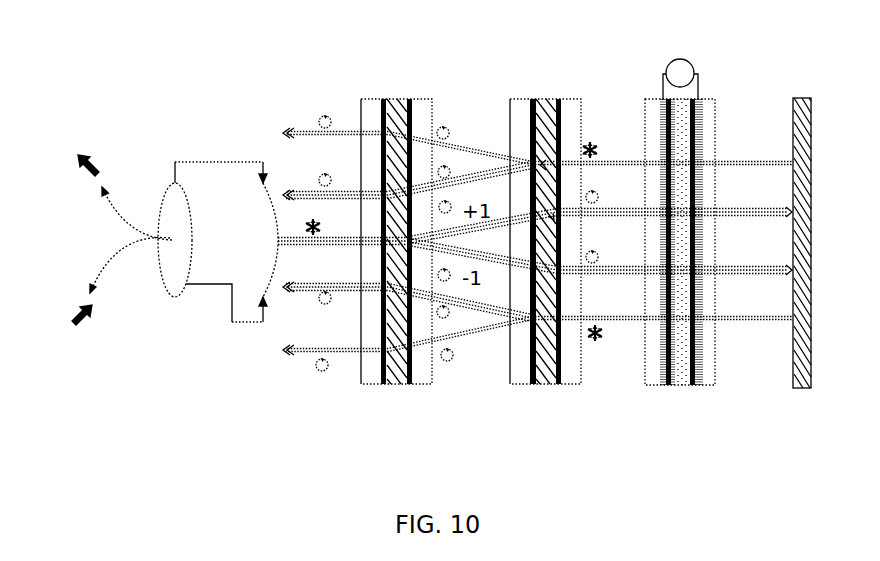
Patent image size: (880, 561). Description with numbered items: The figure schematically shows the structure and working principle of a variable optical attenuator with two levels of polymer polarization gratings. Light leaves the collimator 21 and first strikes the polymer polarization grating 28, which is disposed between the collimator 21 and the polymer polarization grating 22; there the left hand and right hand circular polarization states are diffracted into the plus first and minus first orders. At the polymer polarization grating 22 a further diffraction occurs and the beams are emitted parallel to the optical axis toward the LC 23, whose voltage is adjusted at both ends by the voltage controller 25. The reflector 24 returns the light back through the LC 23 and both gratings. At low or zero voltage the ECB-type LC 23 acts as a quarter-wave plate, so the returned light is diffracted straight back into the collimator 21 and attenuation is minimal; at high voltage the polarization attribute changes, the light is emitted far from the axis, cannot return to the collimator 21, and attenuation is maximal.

The collimator 21 is at (218, 300).
The polymer polarization grating 22 is at (553, 387).
The LC 23 is at (680, 387).
The reflector 24 is at (802, 390).
The voltage controller 25 is at (716, 98).
The polymer polarization grating 28 is at (393, 387).